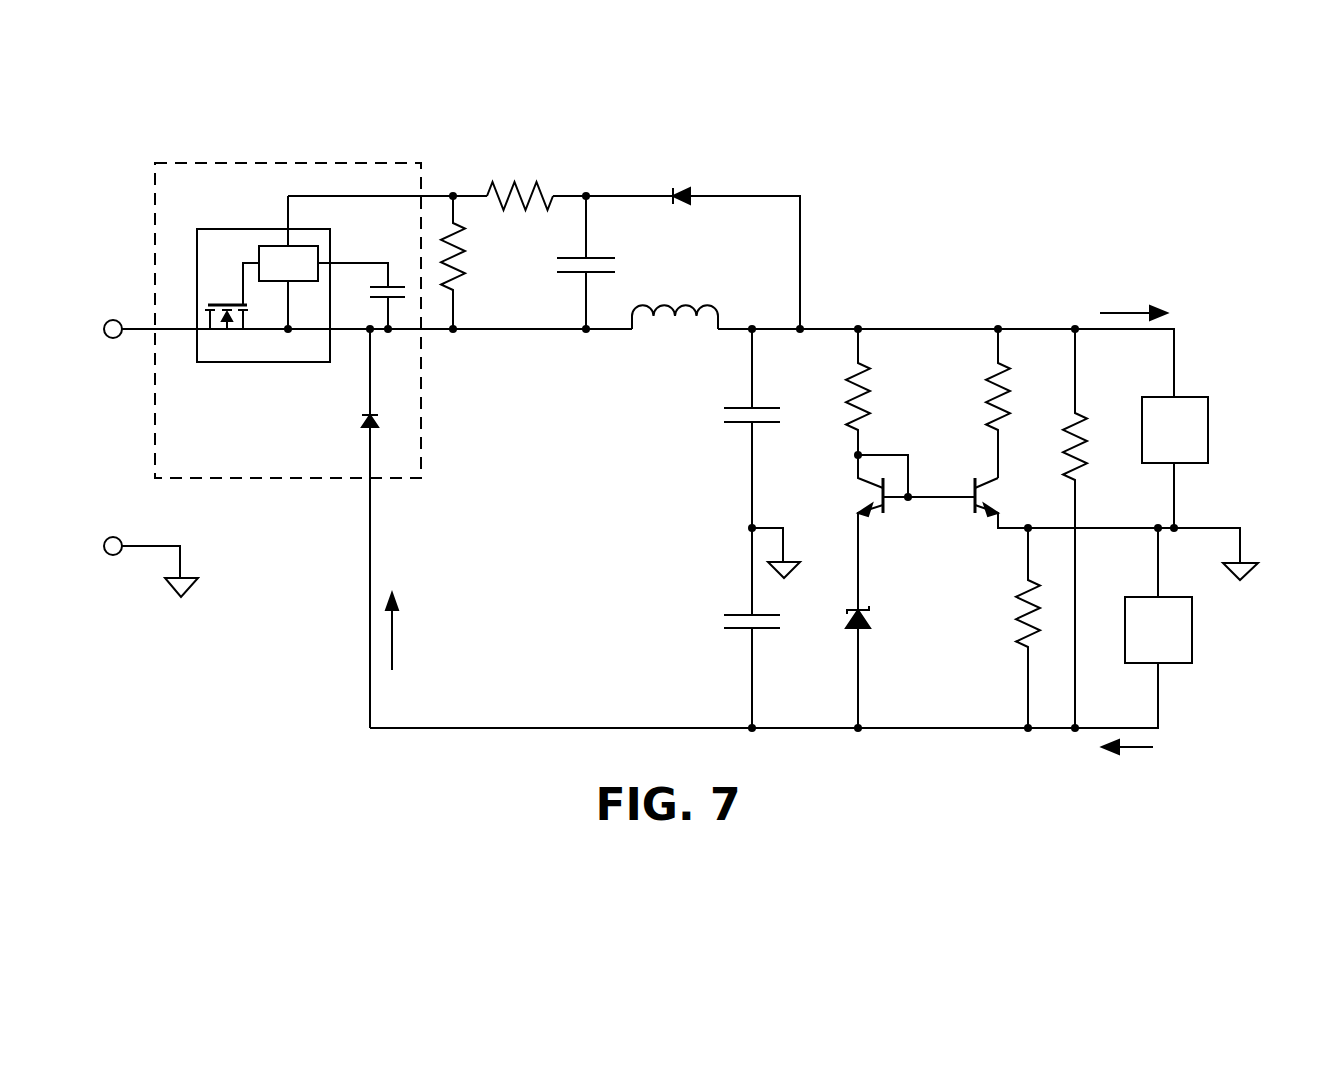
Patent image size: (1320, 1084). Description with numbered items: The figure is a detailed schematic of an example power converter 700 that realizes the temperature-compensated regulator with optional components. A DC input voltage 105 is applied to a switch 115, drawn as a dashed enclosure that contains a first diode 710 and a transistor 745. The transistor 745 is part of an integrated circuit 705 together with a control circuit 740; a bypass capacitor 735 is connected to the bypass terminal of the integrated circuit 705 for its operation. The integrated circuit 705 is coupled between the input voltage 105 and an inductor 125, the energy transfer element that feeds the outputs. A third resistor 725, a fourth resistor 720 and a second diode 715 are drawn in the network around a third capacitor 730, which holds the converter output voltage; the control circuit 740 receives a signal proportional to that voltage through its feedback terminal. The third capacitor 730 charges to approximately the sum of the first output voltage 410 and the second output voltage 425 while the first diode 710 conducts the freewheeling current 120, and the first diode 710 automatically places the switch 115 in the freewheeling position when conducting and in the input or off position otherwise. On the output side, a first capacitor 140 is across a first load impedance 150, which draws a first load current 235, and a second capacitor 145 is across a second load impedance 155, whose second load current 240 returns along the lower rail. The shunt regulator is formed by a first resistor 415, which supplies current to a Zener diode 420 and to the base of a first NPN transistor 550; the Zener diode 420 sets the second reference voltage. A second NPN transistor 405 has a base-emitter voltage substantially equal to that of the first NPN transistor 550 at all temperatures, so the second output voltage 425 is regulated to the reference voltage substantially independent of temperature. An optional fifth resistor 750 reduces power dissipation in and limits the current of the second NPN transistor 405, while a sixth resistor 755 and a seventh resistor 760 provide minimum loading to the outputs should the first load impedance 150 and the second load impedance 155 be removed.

The DC input voltage 105 is at (107, 422).
The switch 115 is at (150, 240).
The freewheeling current 120 is at (405, 620).
The inductor 125 is at (688, 298).
The capacitor 140 is at (738, 396).
The capacitor 145 is at (738, 645).
The load impedance 150 is at (1165, 390).
The load impedance 155 is at (1180, 672).
The load current 235 is at (1136, 304).
The load current 240 is at (1110, 762).
The NPN transistor 405 is at (973, 485).
The output voltage 410 is at (1240, 416).
The resistor 415 is at (845, 372).
The Zener diode 420 is at (850, 604).
The output voltage 425 is at (1236, 614).
The NPN transistor 550 is at (856, 497).
The power converter 700 is at (690, 439).
The integrated circuit 705 is at (208, 376).
The diode 710 is at (360, 432).
The diode 715 is at (694, 186).
The resistor 720 is at (468, 276).
The resistor 725 is at (543, 180).
The capacitor 730 is at (598, 246).
The bypass capacitor 735 is at (405, 264).
The control circuit 740 is at (312, 242).
The transistor 745 is at (228, 292).
The resistor 750 is at (986, 372).
The resistor 755 is at (1090, 455).
The resistor 760 is at (1018, 627).